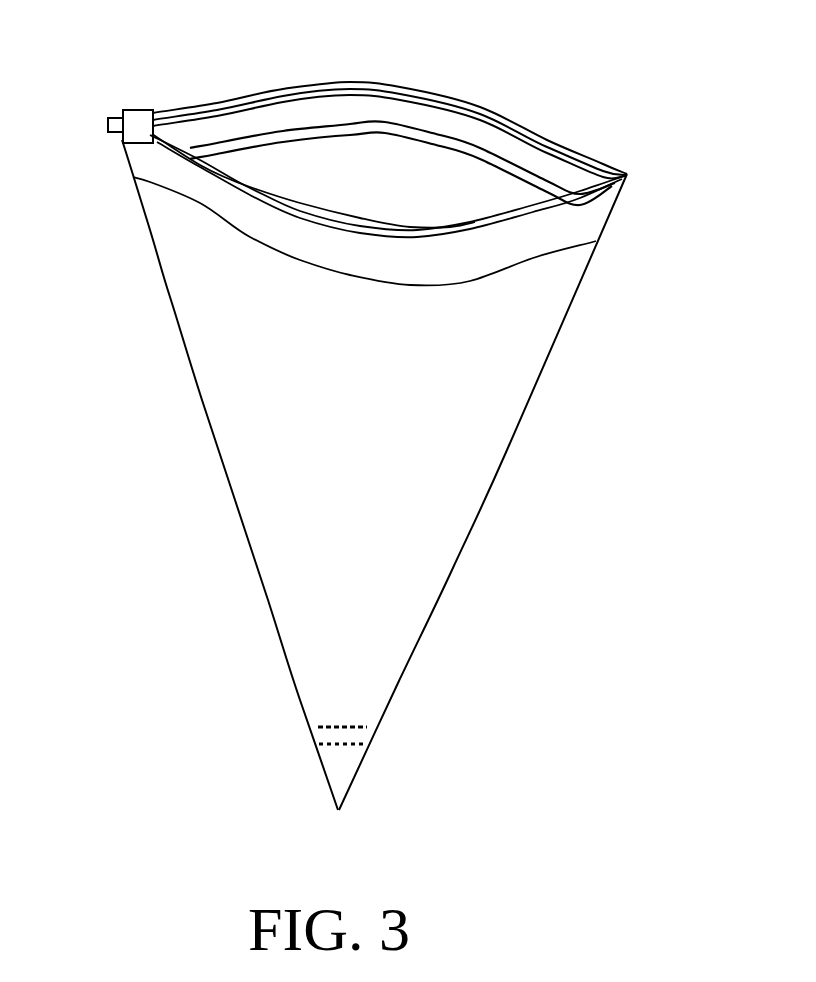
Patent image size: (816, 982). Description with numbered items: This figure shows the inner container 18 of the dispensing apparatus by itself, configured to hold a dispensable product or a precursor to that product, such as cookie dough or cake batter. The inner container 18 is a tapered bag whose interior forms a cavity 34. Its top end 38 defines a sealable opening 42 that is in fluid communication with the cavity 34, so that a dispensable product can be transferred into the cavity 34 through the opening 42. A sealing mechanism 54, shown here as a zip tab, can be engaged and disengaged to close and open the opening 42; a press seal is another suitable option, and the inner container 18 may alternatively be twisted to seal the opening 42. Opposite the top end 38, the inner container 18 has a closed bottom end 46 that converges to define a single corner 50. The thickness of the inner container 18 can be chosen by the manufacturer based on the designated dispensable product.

The inner container 18 is at (612, 205).
The cavity 34 is at (387, 205).
The top end 38 is at (133, 207).
The sealable opening 42 is at (312, 114).
The closed bottom end 46 is at (300, 700).
The corner 50 is at (336, 810).
The sealing mechanism 54 is at (137, 110).